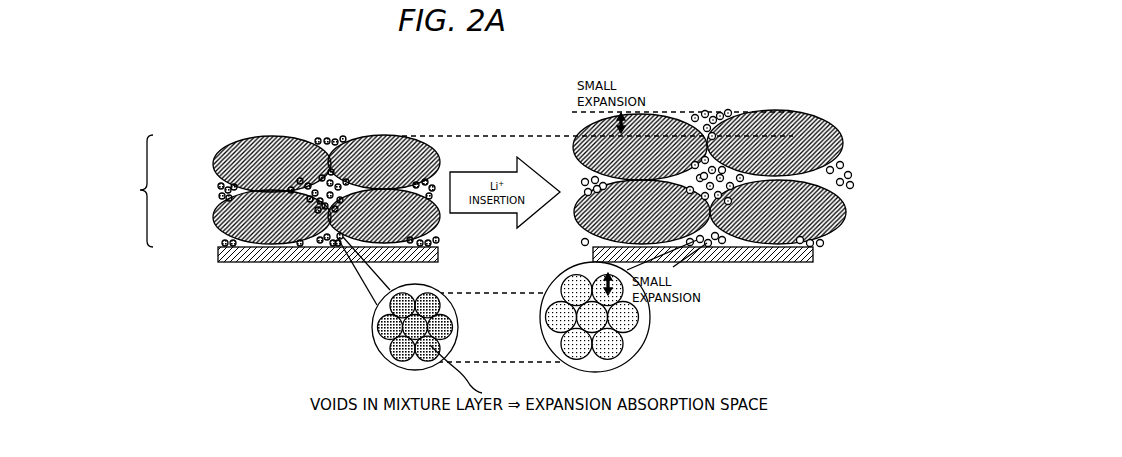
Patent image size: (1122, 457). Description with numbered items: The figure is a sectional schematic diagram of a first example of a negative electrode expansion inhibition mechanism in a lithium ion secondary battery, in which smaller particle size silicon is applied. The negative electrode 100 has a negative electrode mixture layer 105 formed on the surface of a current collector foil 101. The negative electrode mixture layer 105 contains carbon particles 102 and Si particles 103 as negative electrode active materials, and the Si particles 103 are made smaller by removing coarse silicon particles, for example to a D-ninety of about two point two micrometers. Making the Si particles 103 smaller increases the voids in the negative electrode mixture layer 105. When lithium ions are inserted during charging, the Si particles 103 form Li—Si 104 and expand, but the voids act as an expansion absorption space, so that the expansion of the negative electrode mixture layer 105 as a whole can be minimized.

The negative electrode 100 is at (481, 93).
The current collector foil 101 is at (273, 262).
The carbon particles 102 is at (215, 224).
The Si particles 103 is at (318, 137).
The Li—Si 104 is at (710, 115).
The negative electrode mixture layer 105 is at (272, 172).